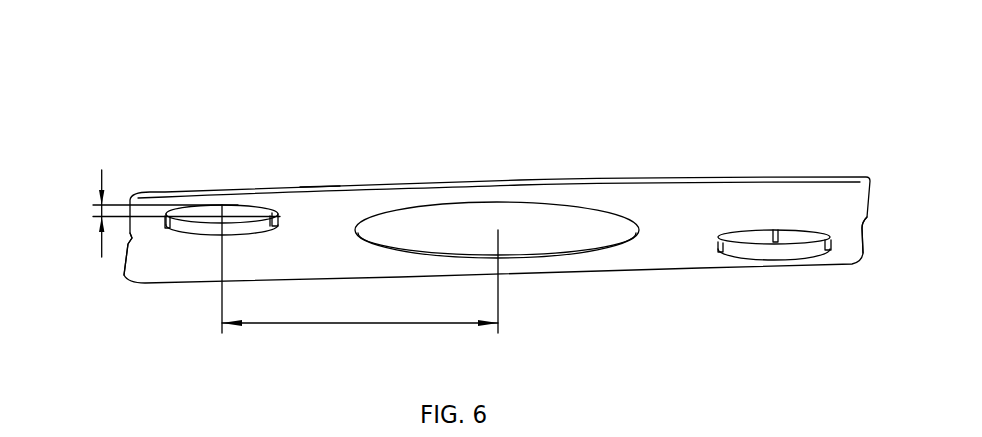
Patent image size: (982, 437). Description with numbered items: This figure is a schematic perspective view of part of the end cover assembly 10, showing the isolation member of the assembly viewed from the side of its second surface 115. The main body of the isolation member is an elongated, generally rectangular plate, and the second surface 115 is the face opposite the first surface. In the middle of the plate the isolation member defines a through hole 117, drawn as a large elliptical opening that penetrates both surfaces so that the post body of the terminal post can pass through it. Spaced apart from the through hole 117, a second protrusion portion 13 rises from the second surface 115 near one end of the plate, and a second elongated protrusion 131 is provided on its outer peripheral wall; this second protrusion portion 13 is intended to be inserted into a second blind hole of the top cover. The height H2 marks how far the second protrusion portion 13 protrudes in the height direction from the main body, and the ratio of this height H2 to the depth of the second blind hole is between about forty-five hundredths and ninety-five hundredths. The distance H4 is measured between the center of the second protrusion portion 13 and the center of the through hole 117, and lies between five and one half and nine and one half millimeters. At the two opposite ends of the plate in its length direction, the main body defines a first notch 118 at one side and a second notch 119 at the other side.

The end cover assembly 10 is at (792, 56).
The second protrusion portion 13 is at (240, 218).
The second elongated protrusion 131 is at (270, 220).
The second surface 115 is at (341, 217).
The through hole 117 is at (538, 217).
The first notch 118 is at (863, 232).
The second notch 119 is at (130, 237).
The height of the second protrusion portion H2 is at (158, 213).
The distance between center of second protrusion portion and center of through hole H4 is at (360, 298).